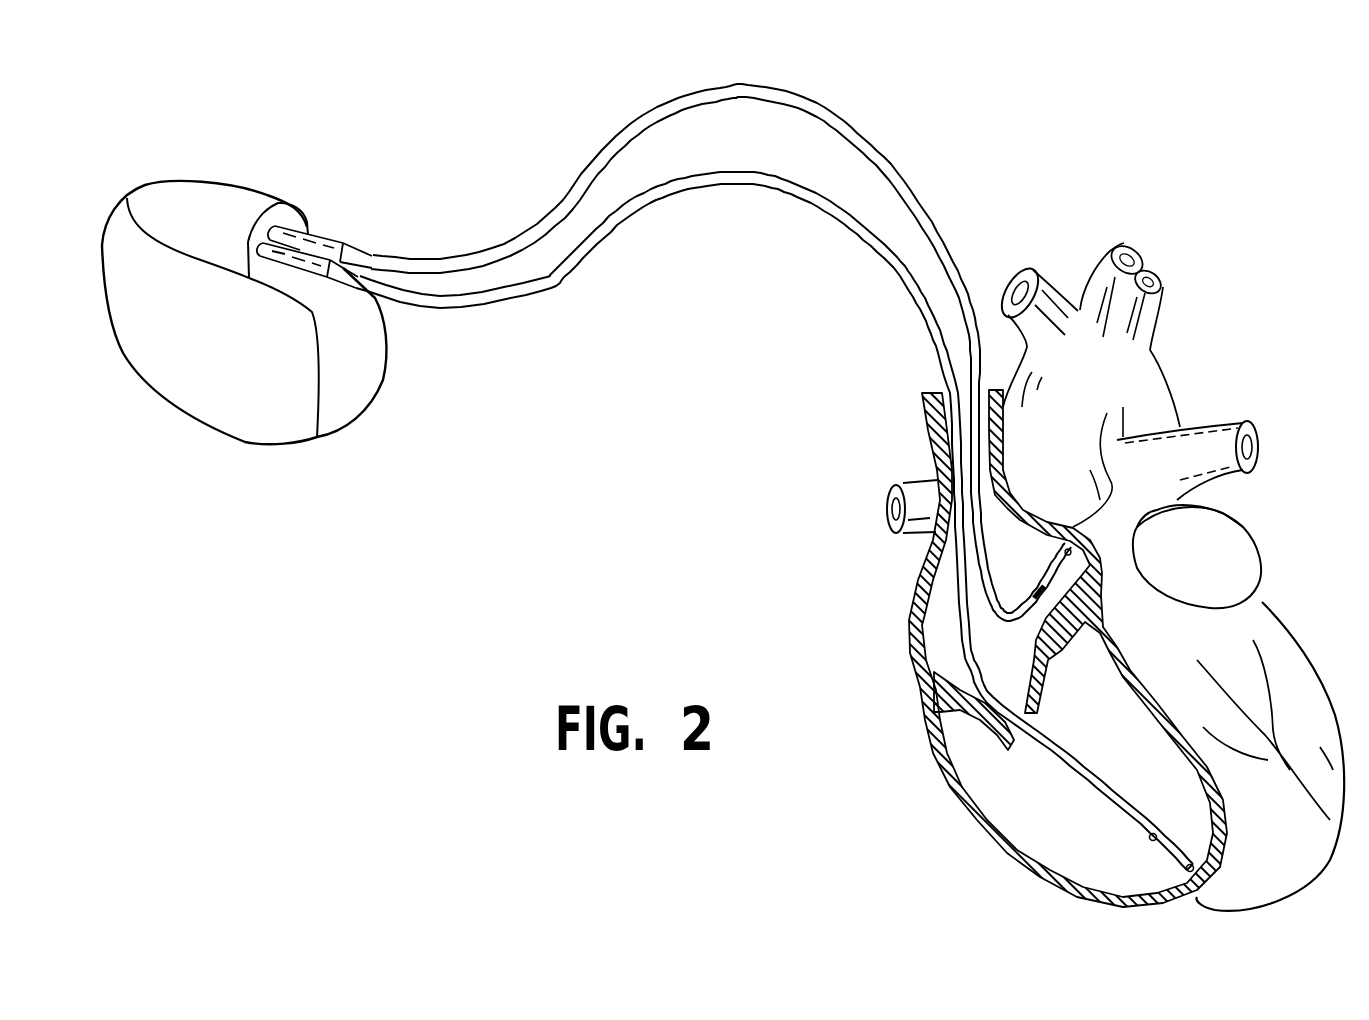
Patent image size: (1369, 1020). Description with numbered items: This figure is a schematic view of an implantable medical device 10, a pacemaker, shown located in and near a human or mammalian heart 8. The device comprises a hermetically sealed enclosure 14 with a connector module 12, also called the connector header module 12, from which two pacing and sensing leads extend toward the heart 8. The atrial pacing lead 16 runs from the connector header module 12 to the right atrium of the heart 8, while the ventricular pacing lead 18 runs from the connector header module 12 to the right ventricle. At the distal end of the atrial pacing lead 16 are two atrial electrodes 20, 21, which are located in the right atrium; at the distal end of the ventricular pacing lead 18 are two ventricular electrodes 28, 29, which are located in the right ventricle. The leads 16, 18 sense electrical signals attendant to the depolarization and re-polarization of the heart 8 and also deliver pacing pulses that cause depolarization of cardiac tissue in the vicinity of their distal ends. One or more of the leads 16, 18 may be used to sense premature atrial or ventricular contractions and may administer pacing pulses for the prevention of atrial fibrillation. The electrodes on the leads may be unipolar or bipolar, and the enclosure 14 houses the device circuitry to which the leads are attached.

The heart 8 is at (1290, 690).
The implantable medical device 10 is at (272, 336).
The connector module 12 is at (240, 178).
The hermetically sealed enclosure 14 is at (273, 423).
The atrial pacing lead 16 is at (759, 92).
The ventricular pacing lead 18 is at (733, 176).
The atrial electrode 20 is at (1037, 592).
The atrial electrode 21 is at (1059, 530).
The ventricular electrode 28 is at (1150, 838).
The ventricular electrode 29 is at (1200, 880).